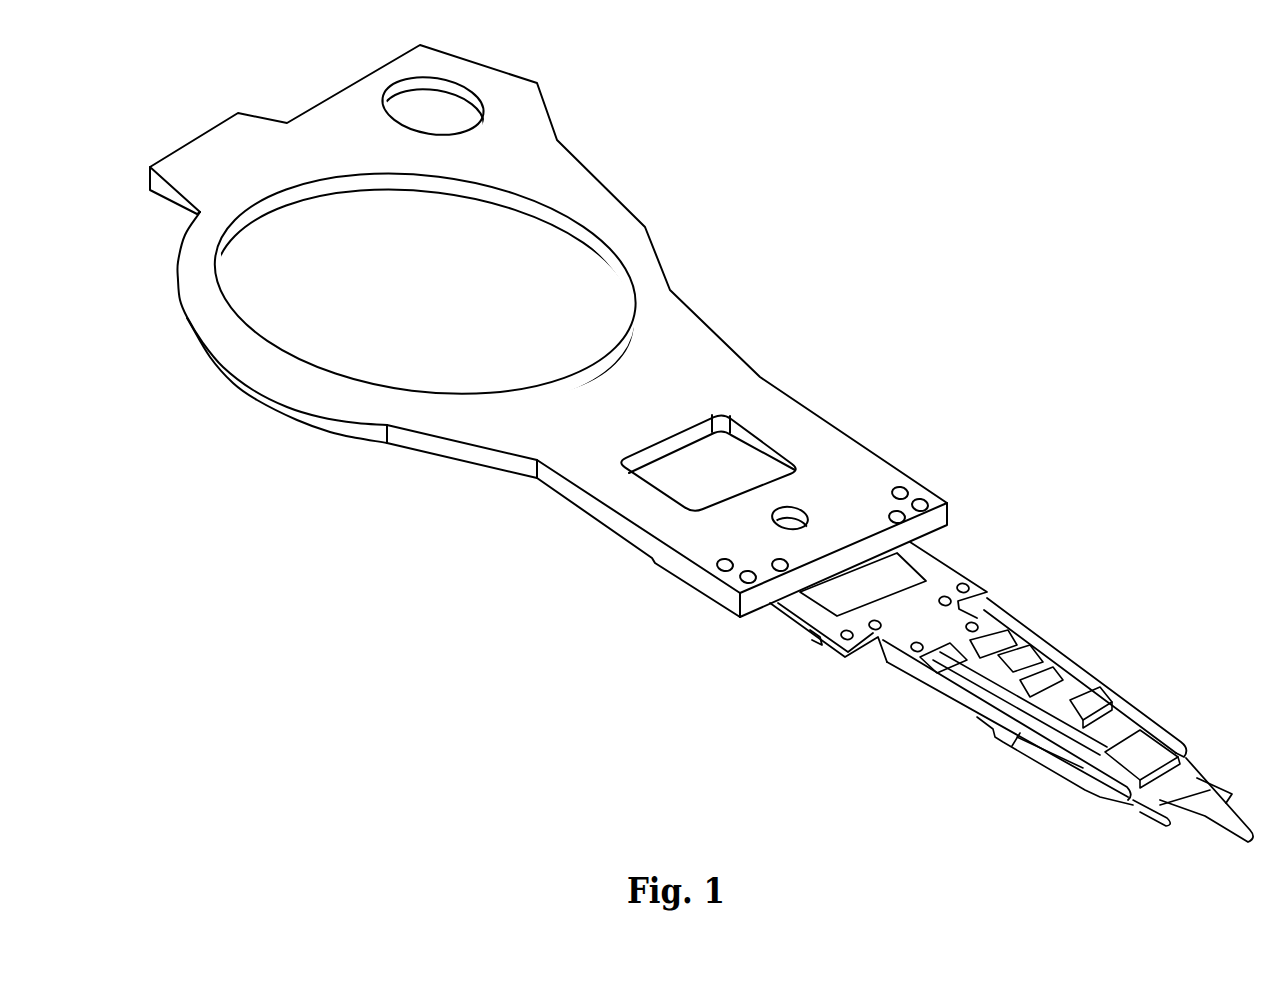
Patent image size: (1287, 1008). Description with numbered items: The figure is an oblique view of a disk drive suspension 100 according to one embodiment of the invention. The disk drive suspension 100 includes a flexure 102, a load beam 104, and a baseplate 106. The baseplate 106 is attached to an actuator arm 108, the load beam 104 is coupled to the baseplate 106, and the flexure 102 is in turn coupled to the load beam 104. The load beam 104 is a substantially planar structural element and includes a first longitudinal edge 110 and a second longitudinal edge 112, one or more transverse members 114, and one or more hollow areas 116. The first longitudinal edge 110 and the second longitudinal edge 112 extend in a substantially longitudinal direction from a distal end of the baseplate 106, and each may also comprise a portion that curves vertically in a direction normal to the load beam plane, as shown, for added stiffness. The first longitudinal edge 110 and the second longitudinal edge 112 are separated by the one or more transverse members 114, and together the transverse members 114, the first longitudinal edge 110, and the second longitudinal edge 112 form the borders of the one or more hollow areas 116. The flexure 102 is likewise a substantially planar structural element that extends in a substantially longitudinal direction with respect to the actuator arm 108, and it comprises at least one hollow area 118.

The disk drive suspension 100 is at (353, 613).
The flexure 102 is at (1100, 772).
The load beam 104 is at (1187, 755).
The baseplate 106 is at (930, 573).
The actuator arm 108 is at (708, 382).
The first longitudinal edge 110 is at (1103, 702).
The second longitudinal edge 112 is at (887, 663).
The transverse members 114 is at (1017, 670).
The hollow areas 116 is at (983, 670).
The hollow area 118 is at (1043, 745).